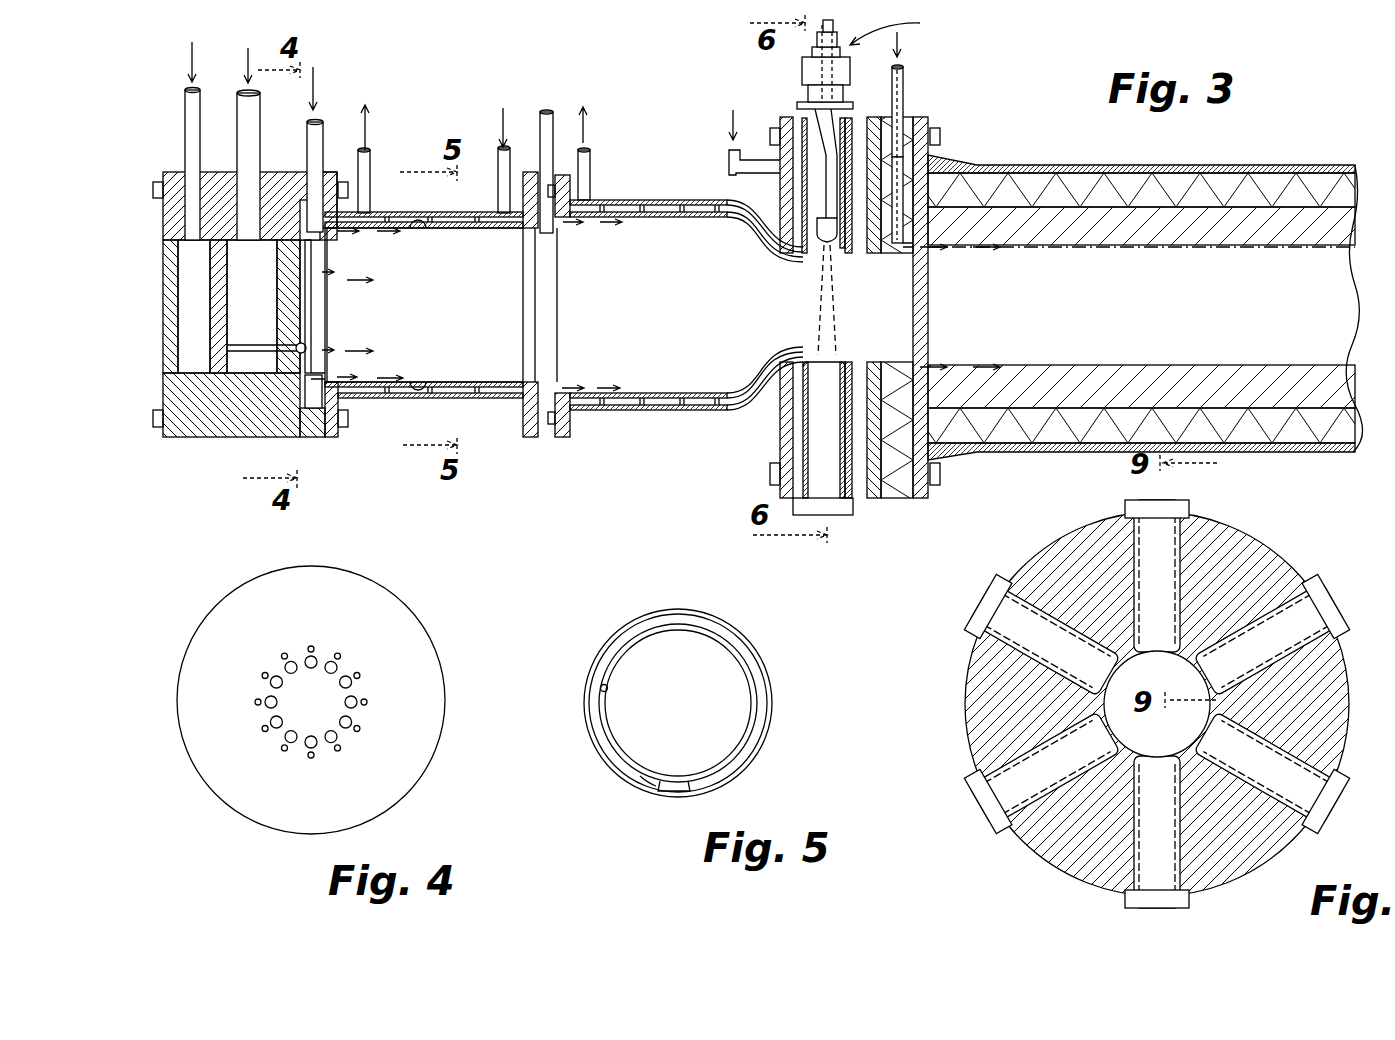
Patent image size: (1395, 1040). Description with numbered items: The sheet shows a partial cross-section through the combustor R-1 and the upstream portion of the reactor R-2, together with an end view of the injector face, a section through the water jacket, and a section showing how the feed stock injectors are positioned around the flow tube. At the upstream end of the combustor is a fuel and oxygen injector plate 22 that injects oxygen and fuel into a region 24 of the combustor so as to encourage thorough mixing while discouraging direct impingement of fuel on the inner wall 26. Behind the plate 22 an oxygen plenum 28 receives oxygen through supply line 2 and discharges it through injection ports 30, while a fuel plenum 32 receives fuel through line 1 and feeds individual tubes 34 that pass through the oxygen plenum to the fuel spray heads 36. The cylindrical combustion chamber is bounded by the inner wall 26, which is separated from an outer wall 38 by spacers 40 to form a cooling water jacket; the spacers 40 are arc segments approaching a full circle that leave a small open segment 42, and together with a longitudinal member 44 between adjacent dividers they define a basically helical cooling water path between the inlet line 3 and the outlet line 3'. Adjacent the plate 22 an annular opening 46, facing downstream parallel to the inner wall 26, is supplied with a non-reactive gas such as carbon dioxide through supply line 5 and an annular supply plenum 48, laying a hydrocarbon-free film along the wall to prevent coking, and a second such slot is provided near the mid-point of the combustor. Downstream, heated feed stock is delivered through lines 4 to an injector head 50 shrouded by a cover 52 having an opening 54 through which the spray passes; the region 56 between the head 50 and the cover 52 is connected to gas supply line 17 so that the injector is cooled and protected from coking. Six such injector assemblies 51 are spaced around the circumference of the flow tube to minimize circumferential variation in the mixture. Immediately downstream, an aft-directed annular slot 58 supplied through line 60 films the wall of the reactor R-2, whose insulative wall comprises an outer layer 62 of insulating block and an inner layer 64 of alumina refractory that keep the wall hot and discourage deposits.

In FIG. 3, the fuel supply line 1 is at (186, 100).
In FIG. 3, the oxygen supply line 2 is at (240, 108).
In FIG. 3, the cooling water inlet line 3 is at (638, 143).
In FIG. 3, the cooling water outlet line 3' is at (476, 143).
In FIG. 3, the feed stock lines 4 is at (822, 24).
In FIG. 3, the non-reactive gas supply line 5 is at (322, 128).
In FIG. 3, the gas supply line 17 is at (838, 32).
In FIG. 3, the fuel and oxygen injector plate 22 is at (290, 420).
In FIG. 3, the combustor region 24 is at (340, 305).
In FIG. 3, the inner wall 26 is at (420, 240).
In FIG. 5, the inner wall 26 is at (600, 687).
In FIG. 3, the oxygen plenum 28 is at (240, 262).
In FIG. 3, the injection ports 30 is at (308, 262).
In FIG. 4, the injection ports 30 is at (340, 656).
In FIG. 3, the fuel plenum 32 is at (190, 316).
In FIG. 3, the tubes 34 is at (250, 346).
In FIG. 4, the fuel spray heads 36 is at (288, 666).
In FIG. 3, the outer wall 38 is at (503, 400).
In FIG. 5, the outer wall 38 is at (620, 628).
In FIG. 3, the spacers 40 is at (460, 222).
In FIG. 5, the spacers 40 is at (718, 630).
In FIG. 5, the open segment 42 is at (673, 792).
In FIG. 5, the longitudinal member 44 is at (648, 784).
In FIG. 3, the annular opening 46 is at (330, 372).
In FIG. 3, the annular supply plenum 48 is at (315, 405).
In FIG. 3, the injector head 50 is at (812, 250).
In FIG. 3, the tube 51 is at (900, 32).
In FIG. 6, the tube 51 is at (1178, 553).
In FIG. 3, the cover 52 is at (848, 255).
In FIG. 3, the opening 54 is at (824, 250).
In FIG. 3, the region 56 is at (848, 125).
In FIG. 3, the aft-directed annular slot 58 is at (915, 250).
In FIG. 3, the supply line 60 is at (904, 78).
In FIG. 3, the outer layer 62 is at (1222, 185).
In FIG. 3, the inner layer 64 is at (1236, 390).
In FIG. 3, the combustor R-1 is at (560, 447).
In FIG. 3, the reactor R-2 is at (1034, 144).